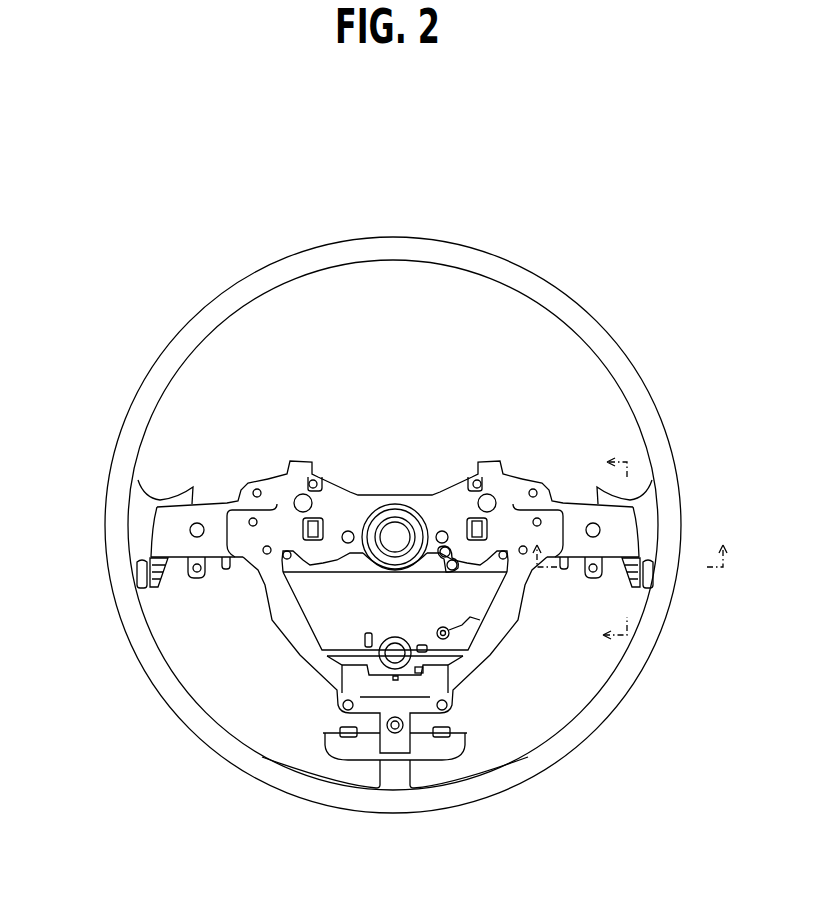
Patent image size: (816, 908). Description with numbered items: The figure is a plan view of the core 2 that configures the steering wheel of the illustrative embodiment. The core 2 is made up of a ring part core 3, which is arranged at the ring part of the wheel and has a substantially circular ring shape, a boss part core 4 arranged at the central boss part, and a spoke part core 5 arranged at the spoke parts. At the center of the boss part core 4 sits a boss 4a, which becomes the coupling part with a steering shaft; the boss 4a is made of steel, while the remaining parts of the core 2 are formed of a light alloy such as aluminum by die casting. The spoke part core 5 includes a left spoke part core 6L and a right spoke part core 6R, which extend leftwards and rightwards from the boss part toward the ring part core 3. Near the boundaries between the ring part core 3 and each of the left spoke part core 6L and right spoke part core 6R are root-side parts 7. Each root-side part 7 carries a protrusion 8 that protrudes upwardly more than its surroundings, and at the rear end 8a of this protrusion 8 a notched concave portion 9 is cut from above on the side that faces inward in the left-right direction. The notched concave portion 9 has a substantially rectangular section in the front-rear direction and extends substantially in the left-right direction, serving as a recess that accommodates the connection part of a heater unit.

The core 2 is at (566, 208).
The ring part core 3 is at (411, 245).
The boss part core 4 is at (439, 468).
The boss 4a is at (394, 520).
The spoke part core 5 is at (322, 717).
The left spoke part core 6L is at (201, 462).
The right spoke part core 6R is at (601, 464).
The root-side part 7 is at (147, 518).
The protrusion 8 is at (183, 500).
The rear end 8a is at (140, 583).
The notched concave portion 9 is at (162, 573).